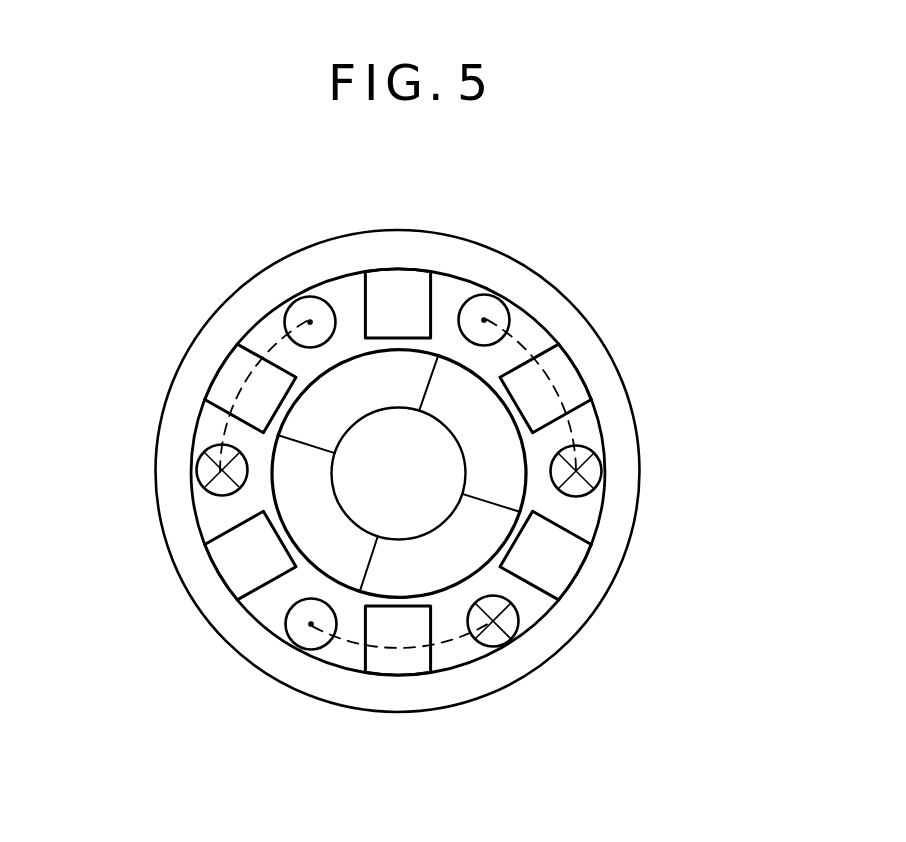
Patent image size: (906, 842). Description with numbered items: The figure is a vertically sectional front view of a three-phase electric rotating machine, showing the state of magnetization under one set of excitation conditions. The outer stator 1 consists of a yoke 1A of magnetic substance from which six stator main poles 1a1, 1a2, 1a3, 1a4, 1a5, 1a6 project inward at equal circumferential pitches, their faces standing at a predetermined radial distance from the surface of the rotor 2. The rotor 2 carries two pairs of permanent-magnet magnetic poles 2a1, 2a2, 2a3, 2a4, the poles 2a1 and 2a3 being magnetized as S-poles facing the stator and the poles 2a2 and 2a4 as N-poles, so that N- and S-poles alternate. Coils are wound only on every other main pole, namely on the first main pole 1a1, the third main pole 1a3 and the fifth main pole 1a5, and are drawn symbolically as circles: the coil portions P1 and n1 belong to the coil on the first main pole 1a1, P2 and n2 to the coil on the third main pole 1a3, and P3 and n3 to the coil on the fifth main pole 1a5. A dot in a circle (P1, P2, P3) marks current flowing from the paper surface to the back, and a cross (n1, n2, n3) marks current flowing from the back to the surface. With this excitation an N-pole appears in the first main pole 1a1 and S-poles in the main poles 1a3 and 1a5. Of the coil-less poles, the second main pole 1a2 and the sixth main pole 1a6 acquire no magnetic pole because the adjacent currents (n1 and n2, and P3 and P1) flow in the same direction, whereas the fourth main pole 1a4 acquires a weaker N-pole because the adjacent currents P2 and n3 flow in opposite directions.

The stator 1 is at (570, 305).
The yoke 1A is at (618, 420).
The first main pole 1a1 is at (562, 383).
The second main pole 1a2 is at (555, 562).
The third main pole 1a3 is at (407, 660).
The fourth main pole 1a4 is at (237, 568).
The fifth main pole 1a5 is at (228, 385).
The sixth main pole 1a6 is at (383, 290).
The rotor 2 is at (437, 350).
The magnetic pole 2a1 is at (497, 473).
The magnetic pole 2a2 is at (453, 557).
The magnetic pole 2a3 is at (310, 497).
The magnetic pole 2a4 is at (327, 390).
The coil portion P1 is at (498, 310).
The coil portion P2 is at (307, 643).
The coil portion P3 is at (297, 320).
The coil portion n1 is at (590, 472).
The coil portion n2 is at (495, 633).
The coil portion n3 is at (207, 470).